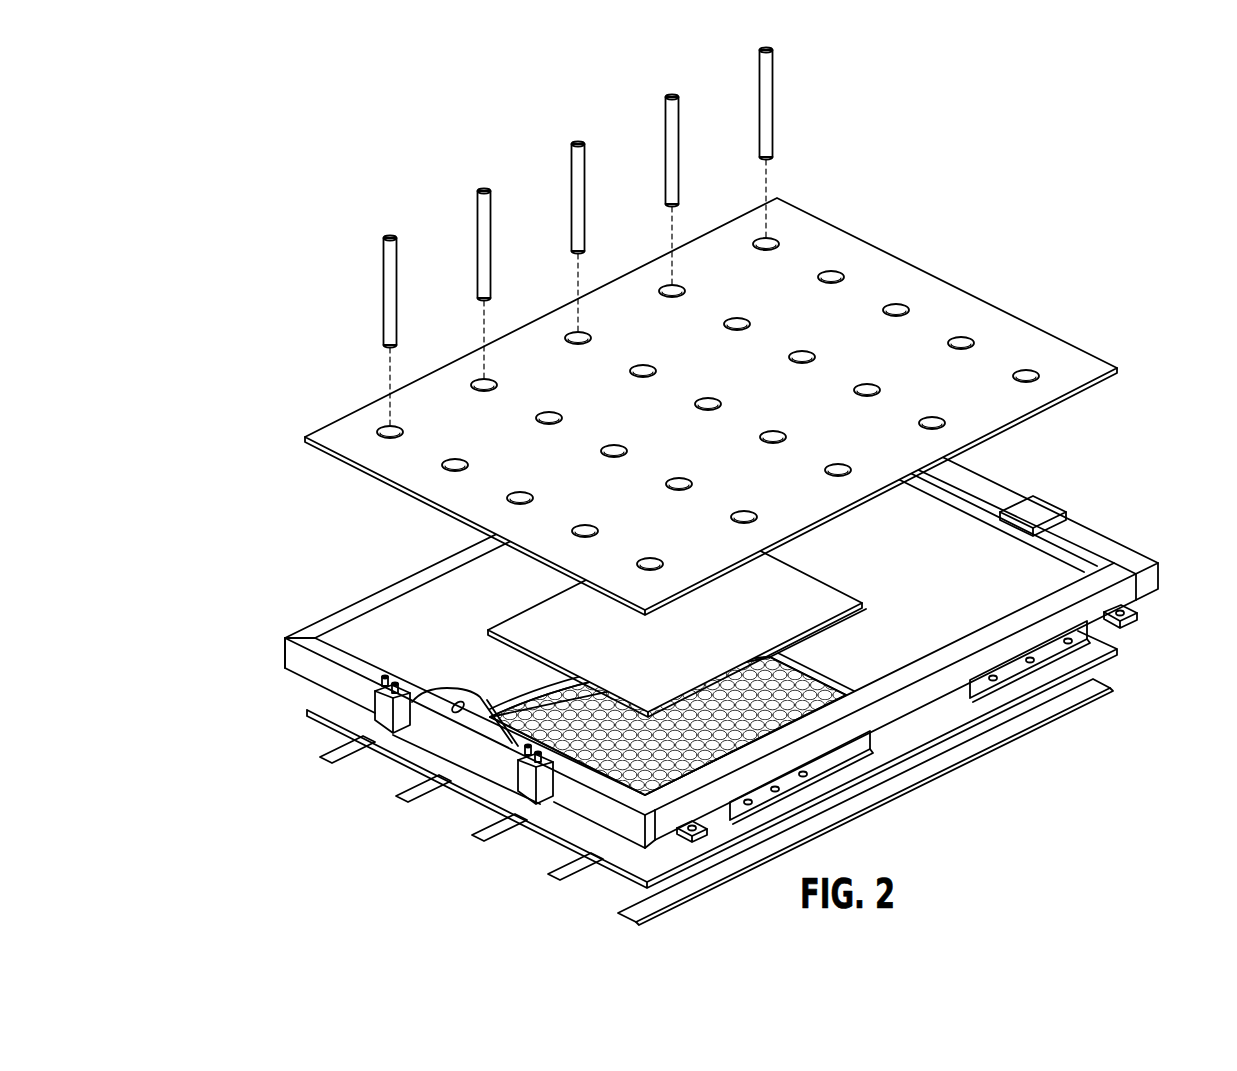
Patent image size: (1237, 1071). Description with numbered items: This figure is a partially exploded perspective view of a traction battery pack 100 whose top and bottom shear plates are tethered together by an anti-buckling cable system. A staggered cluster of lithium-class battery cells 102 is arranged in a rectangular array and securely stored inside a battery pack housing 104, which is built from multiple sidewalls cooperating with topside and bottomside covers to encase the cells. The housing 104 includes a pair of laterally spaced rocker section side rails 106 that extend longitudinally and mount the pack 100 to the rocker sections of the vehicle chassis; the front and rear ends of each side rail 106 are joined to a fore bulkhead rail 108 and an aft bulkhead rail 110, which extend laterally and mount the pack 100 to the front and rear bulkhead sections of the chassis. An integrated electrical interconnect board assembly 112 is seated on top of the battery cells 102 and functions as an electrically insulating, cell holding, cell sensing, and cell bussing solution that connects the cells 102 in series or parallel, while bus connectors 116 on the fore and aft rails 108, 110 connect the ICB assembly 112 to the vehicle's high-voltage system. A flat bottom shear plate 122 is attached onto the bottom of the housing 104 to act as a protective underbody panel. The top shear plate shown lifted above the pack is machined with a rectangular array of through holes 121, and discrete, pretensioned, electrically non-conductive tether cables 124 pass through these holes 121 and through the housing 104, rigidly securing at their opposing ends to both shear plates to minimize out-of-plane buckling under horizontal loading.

The traction battery pack 100 is at (711, 308).
The lithium-class battery cells 102 is at (800, 718).
The battery pack housing 104 is at (668, 655).
The rocker section side rails 106 is at (375, 597).
The fore bulkhead rail 108 is at (290, 655).
The aft bulkhead rail 110 is at (1043, 512).
The integrated electrical interconnect board assembly 112 is at (953, 518).
The bus connectors 116 is at (387, 713).
The through holes 121 is at (378, 431).
The bottom shear plate 122 is at (403, 770).
The tether cables 124 is at (397, 263).